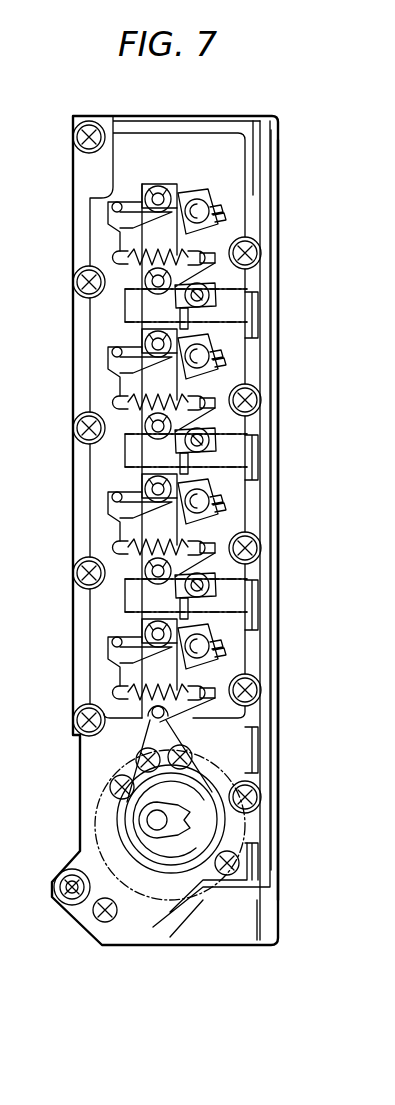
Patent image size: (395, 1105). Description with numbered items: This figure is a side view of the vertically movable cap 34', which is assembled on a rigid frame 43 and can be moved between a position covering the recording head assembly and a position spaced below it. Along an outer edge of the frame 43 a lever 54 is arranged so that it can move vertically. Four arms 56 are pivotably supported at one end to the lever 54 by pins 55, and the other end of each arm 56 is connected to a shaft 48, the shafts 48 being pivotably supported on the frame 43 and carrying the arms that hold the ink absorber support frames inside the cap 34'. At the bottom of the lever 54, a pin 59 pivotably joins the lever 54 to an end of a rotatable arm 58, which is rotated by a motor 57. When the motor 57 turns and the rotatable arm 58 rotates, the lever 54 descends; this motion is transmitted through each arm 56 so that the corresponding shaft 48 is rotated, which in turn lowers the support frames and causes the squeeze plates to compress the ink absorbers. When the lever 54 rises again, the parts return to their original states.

The cap 34' is at (313, 520).
The frame 43 is at (272, 588).
The shaft 48 is at (215, 212).
The lever 54 is at (167, 532).
The pin 55 is at (160, 188).
The arm 56 is at (192, 199).
The motor 57 is at (88, 800).
The rotatable arm 58 is at (150, 737).
The pin 59 is at (166, 728).